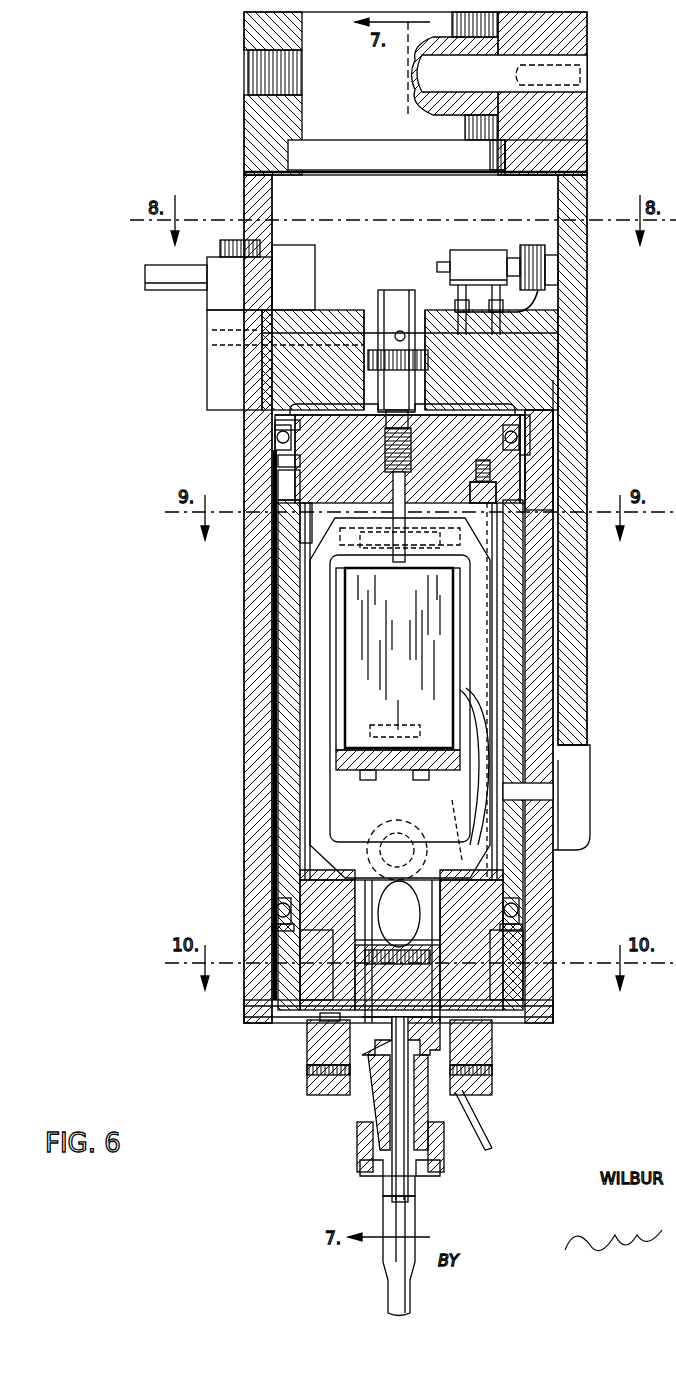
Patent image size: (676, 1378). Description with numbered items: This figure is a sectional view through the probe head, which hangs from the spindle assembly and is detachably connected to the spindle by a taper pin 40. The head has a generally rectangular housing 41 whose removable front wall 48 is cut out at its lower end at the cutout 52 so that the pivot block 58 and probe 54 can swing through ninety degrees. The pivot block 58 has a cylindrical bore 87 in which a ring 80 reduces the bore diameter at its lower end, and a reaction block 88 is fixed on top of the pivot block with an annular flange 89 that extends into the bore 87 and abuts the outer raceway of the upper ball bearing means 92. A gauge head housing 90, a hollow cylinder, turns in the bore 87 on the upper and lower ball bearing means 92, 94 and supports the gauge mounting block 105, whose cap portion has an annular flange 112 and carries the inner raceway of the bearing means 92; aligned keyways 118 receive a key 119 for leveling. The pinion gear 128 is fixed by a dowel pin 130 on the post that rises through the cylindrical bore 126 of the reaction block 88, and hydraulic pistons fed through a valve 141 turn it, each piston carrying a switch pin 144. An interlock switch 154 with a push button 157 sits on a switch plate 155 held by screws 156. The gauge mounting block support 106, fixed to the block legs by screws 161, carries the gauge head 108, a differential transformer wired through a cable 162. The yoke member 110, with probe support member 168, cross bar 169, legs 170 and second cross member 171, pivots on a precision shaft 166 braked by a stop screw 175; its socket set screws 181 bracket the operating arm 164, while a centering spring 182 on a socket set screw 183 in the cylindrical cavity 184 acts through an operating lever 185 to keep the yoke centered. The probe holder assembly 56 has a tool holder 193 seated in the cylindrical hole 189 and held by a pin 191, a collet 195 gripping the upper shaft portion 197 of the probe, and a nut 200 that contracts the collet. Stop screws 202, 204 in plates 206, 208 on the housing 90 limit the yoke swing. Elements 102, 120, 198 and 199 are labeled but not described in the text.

The taper pin 40 is at (586, 72).
The housing 41 is at (258, 658).
The front wall 48 is at (520, 612).
The cutout 52 is at (576, 812).
The probe 54 is at (410, 1224).
The probe holder assembly 56 is at (424, 1118).
The pivot block 58 is at (548, 734).
The ring 80 is at (521, 1004).
The cylindrical bore 87 is at (276, 770).
The reaction block 88 is at (328, 310).
The annular flange 89 is at (276, 428).
The gauge head housing 90 is at (504, 782).
The upper ball bearing means 92 is at (273, 446).
The lower ball bearing means 94 is at (271, 902).
The piston rod 102 is at (273, 794).
The gauge mounting block 105 is at (280, 467).
The gauge mounting block support 106 is at (363, 780).
The gauge head 108 is at (444, 624).
The yoke member 110 is at (442, 830).
The annular flange 112 is at (524, 450).
The keyways 118 is at (494, 484).
The key 119 is at (544, 512).
The screw 120 is at (476, 502).
The cylindrical bore 126 is at (368, 320).
The pinion gear 128 is at (388, 311).
The dowel pin 130 is at (402, 332).
The valve 141 is at (288, 252).
The switch pin 144 is at (418, 306).
The switch 154 is at (460, 252).
The switch plate 155 is at (532, 255).
The screws 156 is at (462, 300).
The push button 157 is at (548, 270).
The screws 161 is at (418, 780).
The cable 162 is at (471, 1104).
The operating arm 164 is at (396, 560).
The precision shaft 166 is at (399, 914).
The probe support member 168 is at (368, 884).
The cross bar 169 is at (374, 842).
The legs 170 is at (320, 670).
The second cross member 171 is at (401, 652).
The stop screw 175 is at (428, 946).
The socket set screws 181 is at (397, 587).
The centering spring 182 is at (276, 474).
The socket set screw 183 is at (478, 406).
The cylindrical cavity 184 is at (272, 386).
The operating lever 185 is at (283, 502).
The cylindrical hole 189 is at (384, 1064).
The pin 191 is at (330, 1030).
The tool holder 193 is at (372, 1108).
The collet 195 is at (438, 1160).
The upper shaft portion 197 is at (385, 1188).
The collar 198 is at (420, 1190).
The cap 199 is at (360, 1174).
The nut 200 is at (358, 1154).
The stop screw 202 is at (492, 1074).
The stop screw 204 is at (308, 1078).
The plate 206 is at (492, 1044).
The plate 208 is at (307, 1062).